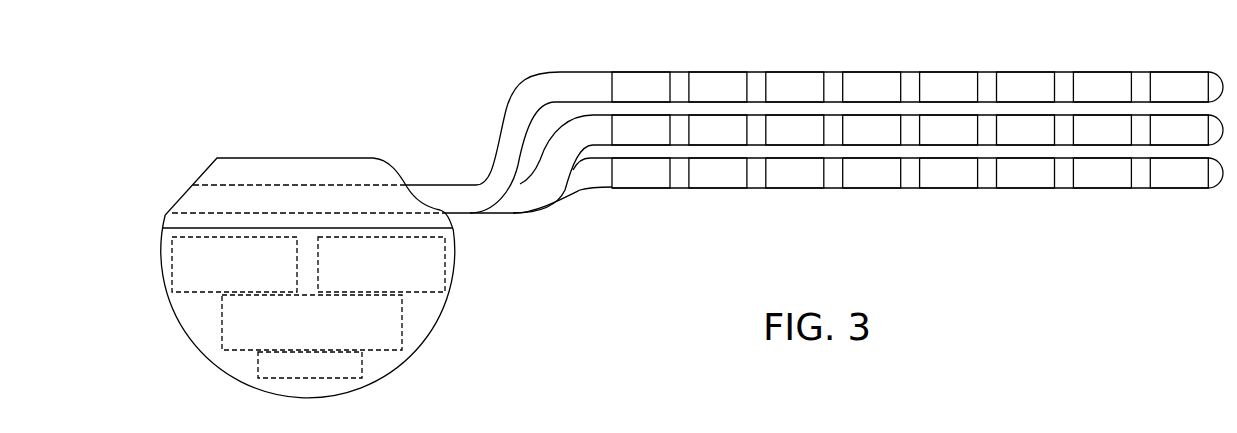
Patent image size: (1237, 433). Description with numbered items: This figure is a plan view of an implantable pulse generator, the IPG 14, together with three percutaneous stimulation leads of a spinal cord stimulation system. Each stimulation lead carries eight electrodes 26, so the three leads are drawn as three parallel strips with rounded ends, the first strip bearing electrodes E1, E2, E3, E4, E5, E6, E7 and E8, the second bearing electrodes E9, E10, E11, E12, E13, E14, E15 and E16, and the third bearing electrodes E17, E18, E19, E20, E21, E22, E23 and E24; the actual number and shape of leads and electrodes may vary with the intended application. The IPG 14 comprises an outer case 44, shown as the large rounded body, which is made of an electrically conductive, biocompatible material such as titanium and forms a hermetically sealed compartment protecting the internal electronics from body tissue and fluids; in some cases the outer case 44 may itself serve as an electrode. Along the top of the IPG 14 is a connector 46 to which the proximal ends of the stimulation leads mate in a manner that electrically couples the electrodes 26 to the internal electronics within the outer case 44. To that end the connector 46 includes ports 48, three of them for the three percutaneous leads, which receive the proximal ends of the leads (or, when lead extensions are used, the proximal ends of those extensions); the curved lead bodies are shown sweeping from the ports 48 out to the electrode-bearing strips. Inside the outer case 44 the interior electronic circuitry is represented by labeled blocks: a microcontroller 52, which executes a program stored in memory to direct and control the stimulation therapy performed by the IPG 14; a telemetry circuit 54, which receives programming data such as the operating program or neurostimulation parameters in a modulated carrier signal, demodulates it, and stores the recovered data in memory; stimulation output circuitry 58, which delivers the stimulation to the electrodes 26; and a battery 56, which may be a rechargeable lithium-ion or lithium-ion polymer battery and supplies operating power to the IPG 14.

The implantable pulse generator (IPG) 14 is at (229, 85).
The electrodes 26 is at (793, 72).
The outer case 44 is at (433, 330).
The connector 46 is at (265, 158).
The ports 48 is at (323, 213).
The microcontroller 52 is at (172, 262).
The telemetry circuit 54 is at (445, 264).
The battery 56 is at (258, 368).
The stimulation output circuitry 58 is at (222, 315).
The electrode E1 is at (1179, 87).
The electrode E2 is at (1102, 87).
The electrode E3 is at (1026, 87).
The electrode E4 is at (949, 87).
The electrode E5 is at (872, 87).
The electrode E6 is at (795, 87).
The electrode E7 is at (718, 87).
The electrode E8 is at (641, 87).
The electrode E9 is at (1179, 130).
The electrode E10 is at (1102, 130).
The electrode E11 is at (1026, 130).
The electrode E12 is at (949, 130).
The electrode E13 is at (872, 130).
The electrode E14 is at (795, 130).
The electrode E15 is at (718, 130).
The electrode E16 is at (641, 130).
The electrode E17 is at (1179, 173).
The electrode E18 is at (1102, 173).
The electrode E19 is at (1026, 173).
The electrode E20 is at (949, 173).
The electrode E21 is at (872, 173).
The electrode E22 is at (795, 173).
The electrode E23 is at (718, 173).
The electrode E24 is at (641, 173).